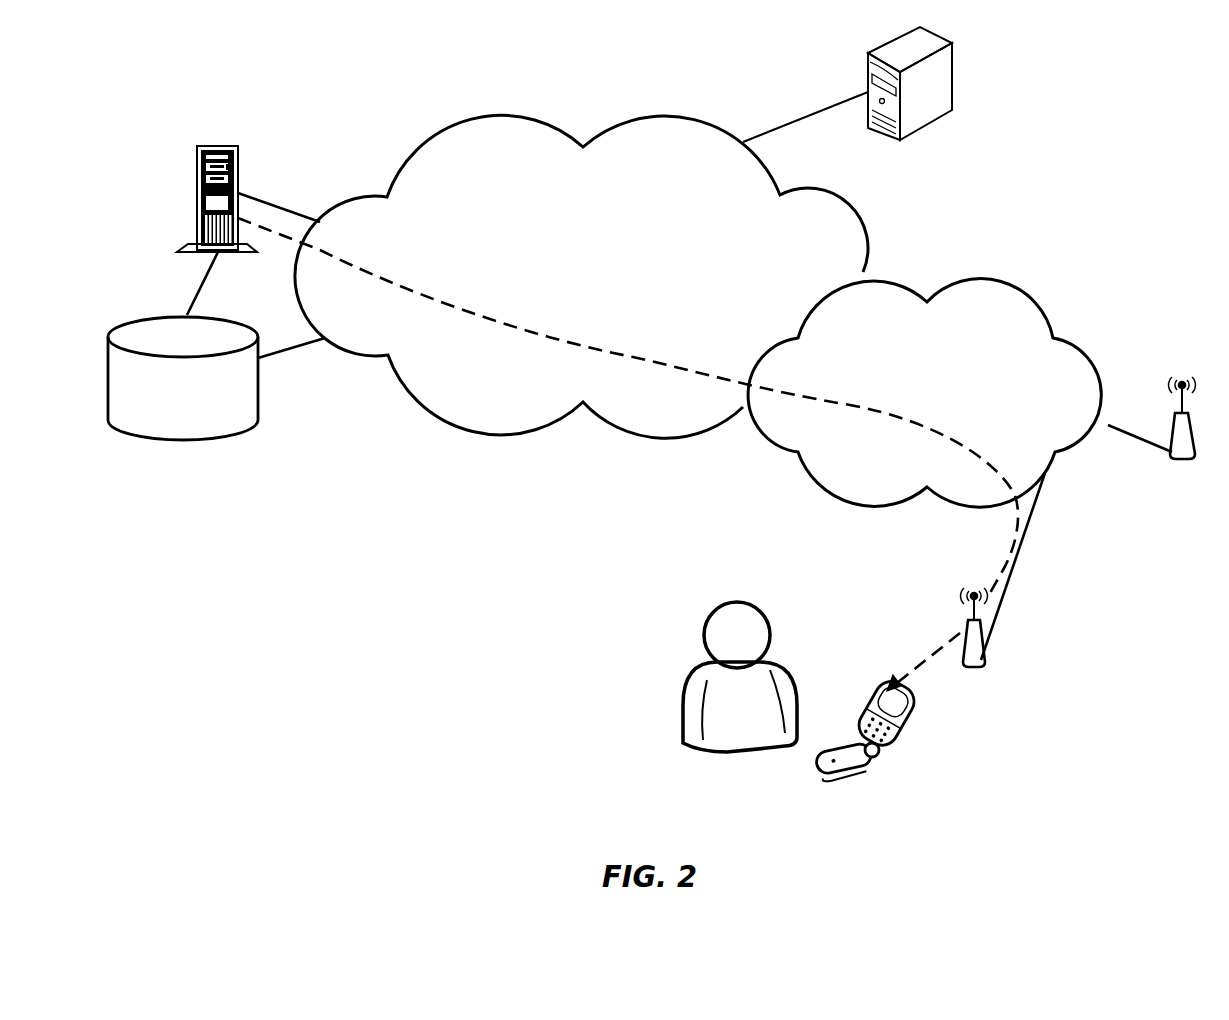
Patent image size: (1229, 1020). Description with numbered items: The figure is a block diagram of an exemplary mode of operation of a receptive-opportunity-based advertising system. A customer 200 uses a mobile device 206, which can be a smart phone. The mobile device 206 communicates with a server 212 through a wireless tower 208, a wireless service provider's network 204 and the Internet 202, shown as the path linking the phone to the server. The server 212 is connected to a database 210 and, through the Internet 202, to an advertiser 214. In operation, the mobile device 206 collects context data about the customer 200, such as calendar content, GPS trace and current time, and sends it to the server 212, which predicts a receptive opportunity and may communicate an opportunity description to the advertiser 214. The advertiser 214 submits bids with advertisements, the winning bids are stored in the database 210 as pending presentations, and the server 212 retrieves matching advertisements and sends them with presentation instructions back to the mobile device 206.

The customer 200 is at (682, 720).
The Internet 202 is at (581, 276).
The wireless service provider's network 204 is at (924, 393).
The mobile device 206 is at (843, 775).
The wireless tower 208 is at (985, 660).
The database 210 is at (183, 378).
The server 212 is at (218, 145).
The advertiser 214 is at (925, 121).